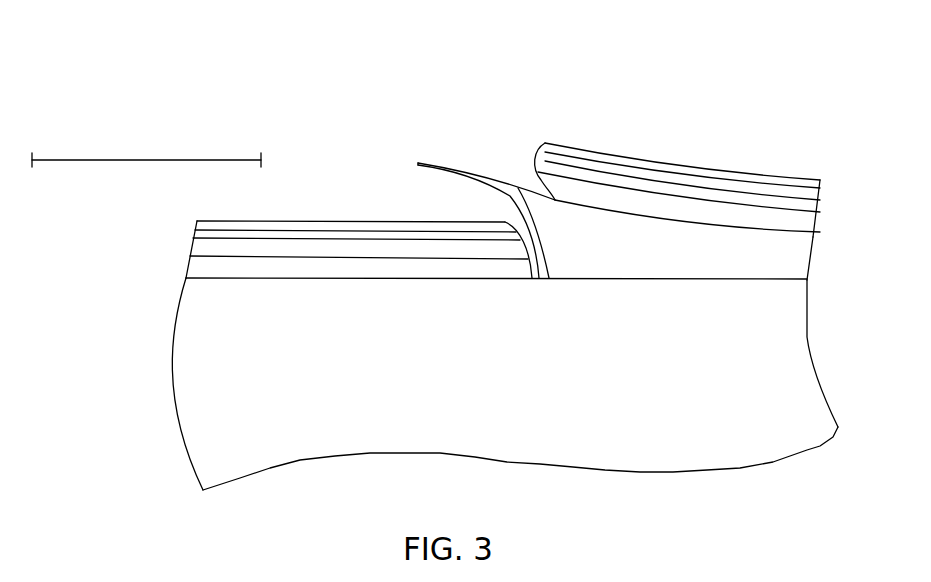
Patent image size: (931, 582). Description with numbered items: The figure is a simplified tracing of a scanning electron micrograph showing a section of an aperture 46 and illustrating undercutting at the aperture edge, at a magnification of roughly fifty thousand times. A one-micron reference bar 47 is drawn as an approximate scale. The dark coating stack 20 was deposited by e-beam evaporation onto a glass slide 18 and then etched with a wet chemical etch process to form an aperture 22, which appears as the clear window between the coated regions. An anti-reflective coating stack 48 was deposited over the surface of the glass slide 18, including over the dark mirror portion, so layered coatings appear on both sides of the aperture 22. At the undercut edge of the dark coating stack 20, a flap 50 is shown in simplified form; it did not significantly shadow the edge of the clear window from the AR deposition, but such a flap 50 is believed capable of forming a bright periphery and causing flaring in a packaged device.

The glass slide 18 is at (809, 344).
The dark coating stack 20 is at (823, 237).
The aperture 22 is at (345, 201).
The aperture 46 is at (255, 74).
The reference bar 47 is at (143, 159).
The anti-reflective coating stack 48 is at (190, 220).
The flap 50 is at (458, 165).